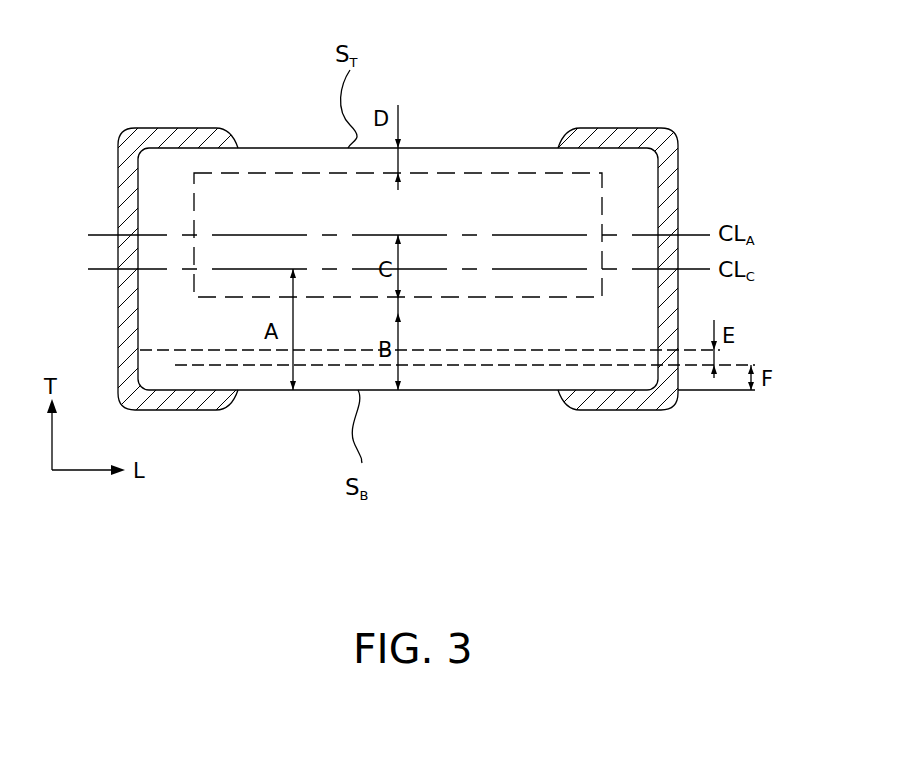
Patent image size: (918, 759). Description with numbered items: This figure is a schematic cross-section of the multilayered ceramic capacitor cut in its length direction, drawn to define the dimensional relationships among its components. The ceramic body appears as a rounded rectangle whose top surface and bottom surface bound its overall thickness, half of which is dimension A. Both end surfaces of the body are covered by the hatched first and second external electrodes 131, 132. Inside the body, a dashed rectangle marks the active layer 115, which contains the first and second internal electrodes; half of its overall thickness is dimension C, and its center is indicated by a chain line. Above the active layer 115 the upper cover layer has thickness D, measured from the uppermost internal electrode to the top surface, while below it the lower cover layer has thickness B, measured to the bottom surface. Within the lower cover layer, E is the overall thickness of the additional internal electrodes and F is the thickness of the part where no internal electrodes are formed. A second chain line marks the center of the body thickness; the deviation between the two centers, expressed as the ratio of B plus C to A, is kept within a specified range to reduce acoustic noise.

The first external electrode 131 is at (178, 138).
The second external electrode 132 is at (617, 138).
The active layer 115 is at (614, 193).